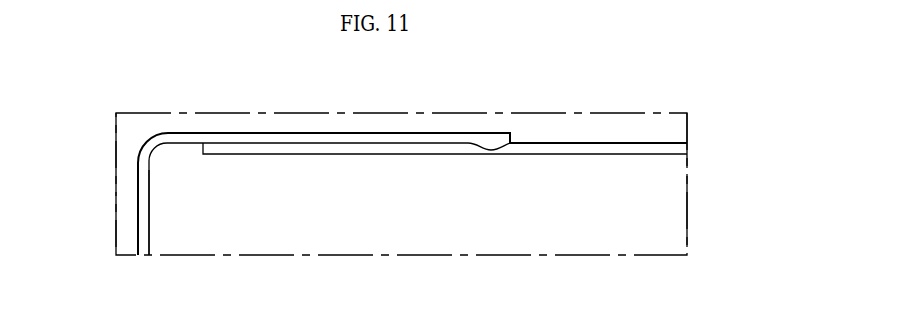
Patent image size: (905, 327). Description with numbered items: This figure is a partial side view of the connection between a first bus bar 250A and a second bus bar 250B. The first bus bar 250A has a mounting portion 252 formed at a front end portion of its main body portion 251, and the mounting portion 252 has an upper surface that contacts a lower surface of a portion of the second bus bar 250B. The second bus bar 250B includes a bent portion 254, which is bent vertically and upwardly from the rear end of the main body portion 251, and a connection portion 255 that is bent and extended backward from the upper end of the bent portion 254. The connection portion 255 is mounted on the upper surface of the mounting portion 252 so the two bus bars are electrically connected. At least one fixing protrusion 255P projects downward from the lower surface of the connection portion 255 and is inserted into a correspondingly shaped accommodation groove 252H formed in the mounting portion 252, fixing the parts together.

The first bus bar 250A is at (661, 120).
The second bus bar 250B is at (116, 148).
The main body portion 251 is at (582, 143).
The mounting portion 252 is at (322, 155).
The accommodation groove 252H is at (507, 150).
The bent portion 254 is at (137, 212).
The connection portion 255 is at (315, 133).
The fixing protrusion 255P is at (490, 143).